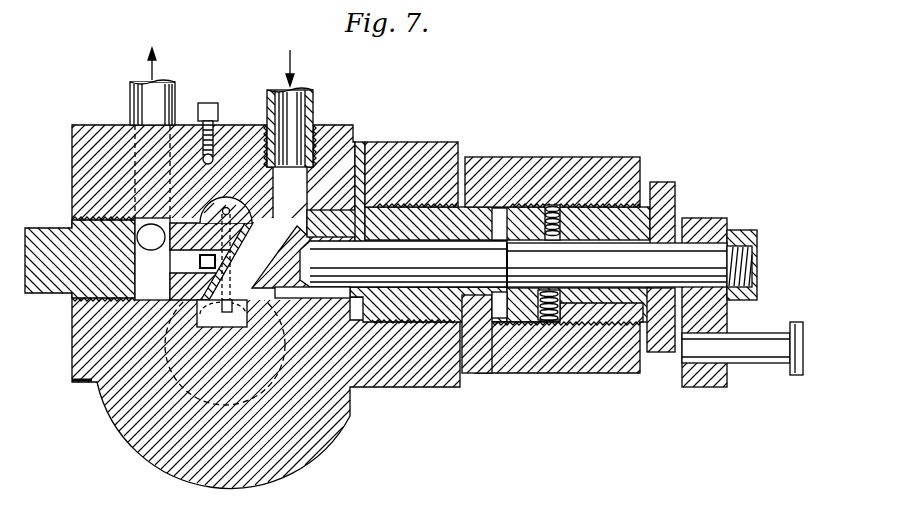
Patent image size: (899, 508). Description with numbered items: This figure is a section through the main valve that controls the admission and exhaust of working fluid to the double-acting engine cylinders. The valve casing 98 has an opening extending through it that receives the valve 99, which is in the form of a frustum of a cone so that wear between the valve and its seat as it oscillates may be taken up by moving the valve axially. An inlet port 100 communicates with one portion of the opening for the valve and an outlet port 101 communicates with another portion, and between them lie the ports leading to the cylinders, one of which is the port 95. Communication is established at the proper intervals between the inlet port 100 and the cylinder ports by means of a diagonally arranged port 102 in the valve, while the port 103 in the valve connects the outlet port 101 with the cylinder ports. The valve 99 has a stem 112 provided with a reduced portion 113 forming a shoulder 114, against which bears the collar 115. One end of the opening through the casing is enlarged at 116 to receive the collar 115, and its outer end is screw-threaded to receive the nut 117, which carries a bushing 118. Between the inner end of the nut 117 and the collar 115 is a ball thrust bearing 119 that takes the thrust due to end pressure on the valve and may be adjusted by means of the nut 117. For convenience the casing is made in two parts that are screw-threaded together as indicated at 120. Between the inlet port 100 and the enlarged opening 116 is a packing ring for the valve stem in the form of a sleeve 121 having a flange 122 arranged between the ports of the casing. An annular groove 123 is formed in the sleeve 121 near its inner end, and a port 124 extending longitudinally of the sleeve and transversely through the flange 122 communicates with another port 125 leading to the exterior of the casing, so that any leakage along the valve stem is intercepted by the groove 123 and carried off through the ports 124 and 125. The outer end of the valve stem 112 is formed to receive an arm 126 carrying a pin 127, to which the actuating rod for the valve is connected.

The casing 98 is at (97, 135).
The valve 99 is at (170, 290).
The inlet port 100 is at (290, 122).
The outlet port 101 is at (151, 237).
The diagonally arranged port 102 is at (240, 248).
The port 103 is at (193, 262).
The port 95 is at (222, 314).
The valve stem 112 is at (403, 264).
The reduced portion 113 is at (629, 265).
The shoulder 114 is at (509, 258).
The collar 115 is at (522, 310).
The enlarged opening 116 is at (499, 216).
The nut 117 is at (657, 354).
The bushing 118 is at (676, 205).
The ball thrust bearing 119 is at (552, 216).
The screw-threaded joint 120 is at (420, 203).
The sleeve 121 is at (475, 303).
The flange 122 is at (363, 310).
The annular groove 123 is at (313, 297).
The port 124 is at (333, 226).
The port 125 is at (367, 140).
The arm 126 is at (717, 220).
The pin 127 is at (762, 356).